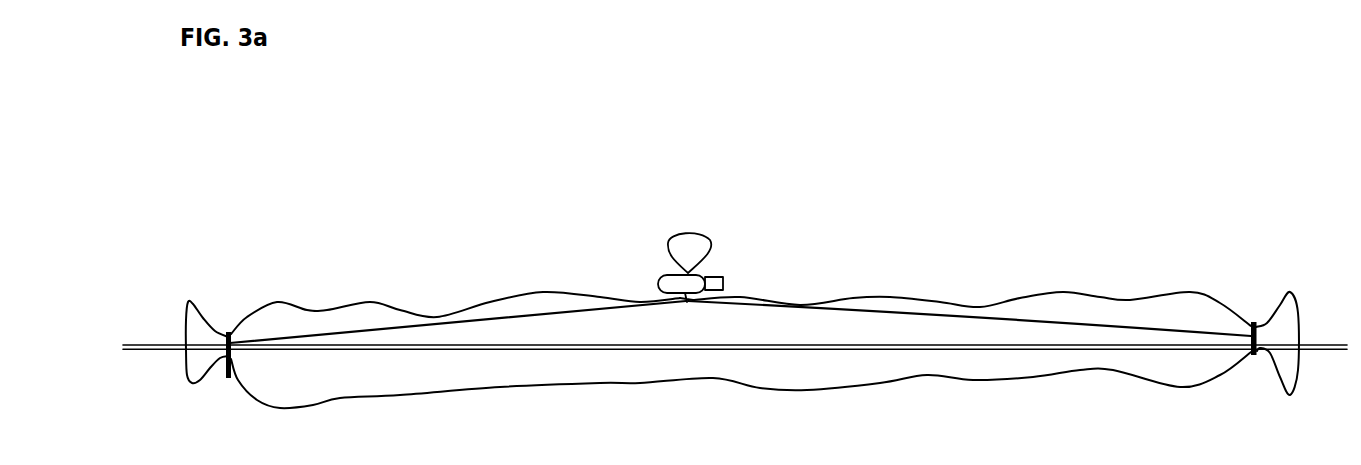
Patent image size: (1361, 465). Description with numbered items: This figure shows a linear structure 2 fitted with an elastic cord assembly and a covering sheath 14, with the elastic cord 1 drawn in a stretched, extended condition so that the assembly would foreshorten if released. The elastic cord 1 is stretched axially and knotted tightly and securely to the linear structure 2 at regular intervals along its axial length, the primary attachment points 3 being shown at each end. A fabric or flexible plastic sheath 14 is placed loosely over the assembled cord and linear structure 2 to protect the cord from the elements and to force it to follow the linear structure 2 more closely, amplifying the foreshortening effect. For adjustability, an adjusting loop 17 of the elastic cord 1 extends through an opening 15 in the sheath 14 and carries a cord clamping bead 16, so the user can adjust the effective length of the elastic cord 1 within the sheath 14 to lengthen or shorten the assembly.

The elastic cord 1 is at (410, 327).
The linear structure 2 is at (138, 357).
The attachment point 3 is at (224, 330).
The sheath 14 is at (962, 292).
The opening 15 is at (678, 298).
The cord clamping bead 16 is at (735, 272).
The adjusting loop 17 is at (700, 226).